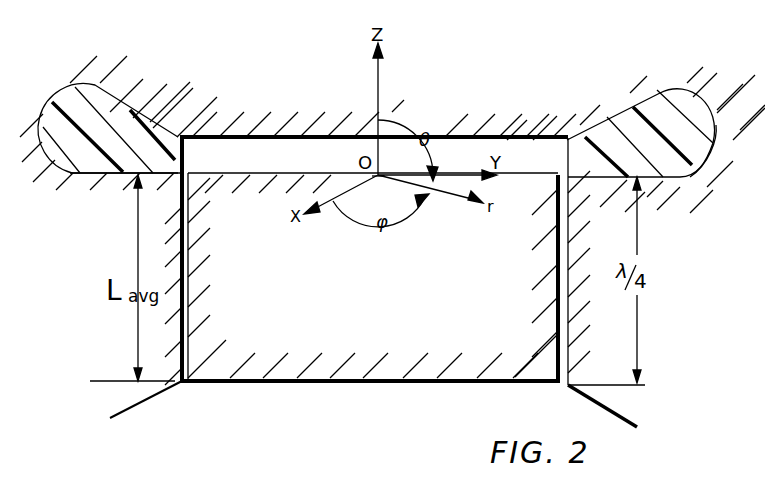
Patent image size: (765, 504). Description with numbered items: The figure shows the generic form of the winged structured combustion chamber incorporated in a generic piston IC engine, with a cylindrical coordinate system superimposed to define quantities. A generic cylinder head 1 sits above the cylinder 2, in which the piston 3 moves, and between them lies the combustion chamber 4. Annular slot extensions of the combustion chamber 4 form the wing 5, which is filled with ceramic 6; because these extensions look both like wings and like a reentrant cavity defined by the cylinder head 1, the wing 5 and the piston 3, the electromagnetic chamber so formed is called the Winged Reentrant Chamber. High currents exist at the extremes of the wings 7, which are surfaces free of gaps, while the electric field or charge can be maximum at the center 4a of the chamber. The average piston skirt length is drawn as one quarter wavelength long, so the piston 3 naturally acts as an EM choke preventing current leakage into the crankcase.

The cylinder head 1 is at (384, 114).
The cylinder 2 is at (579, 261).
The piston 3 is at (536, 278).
The combustion chamber 4 is at (374, 155).
The center 4a is at (389, 164).
The wing 5 is at (625, 108).
The ceramic 6 is at (663, 117).
The extremes of the wings 7 is at (713, 136).